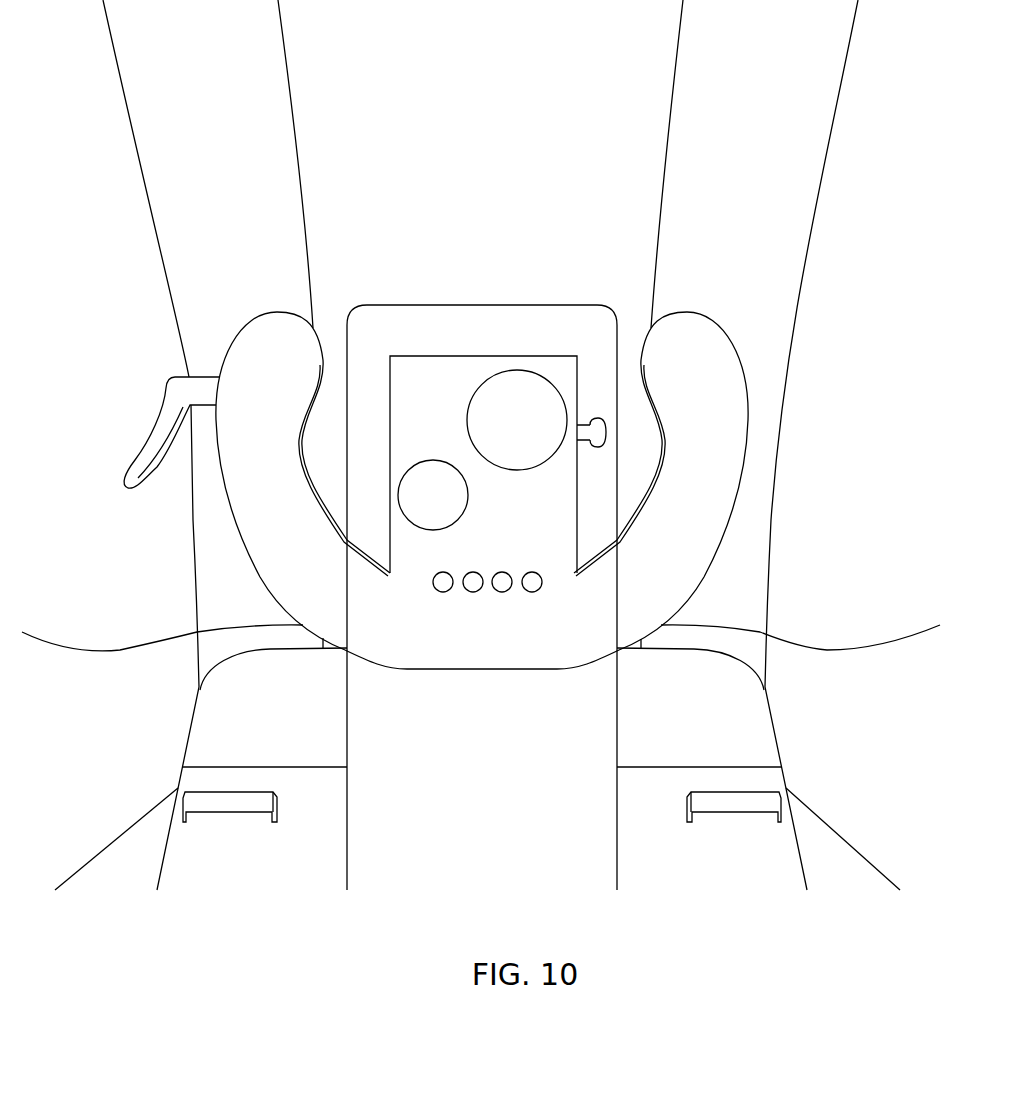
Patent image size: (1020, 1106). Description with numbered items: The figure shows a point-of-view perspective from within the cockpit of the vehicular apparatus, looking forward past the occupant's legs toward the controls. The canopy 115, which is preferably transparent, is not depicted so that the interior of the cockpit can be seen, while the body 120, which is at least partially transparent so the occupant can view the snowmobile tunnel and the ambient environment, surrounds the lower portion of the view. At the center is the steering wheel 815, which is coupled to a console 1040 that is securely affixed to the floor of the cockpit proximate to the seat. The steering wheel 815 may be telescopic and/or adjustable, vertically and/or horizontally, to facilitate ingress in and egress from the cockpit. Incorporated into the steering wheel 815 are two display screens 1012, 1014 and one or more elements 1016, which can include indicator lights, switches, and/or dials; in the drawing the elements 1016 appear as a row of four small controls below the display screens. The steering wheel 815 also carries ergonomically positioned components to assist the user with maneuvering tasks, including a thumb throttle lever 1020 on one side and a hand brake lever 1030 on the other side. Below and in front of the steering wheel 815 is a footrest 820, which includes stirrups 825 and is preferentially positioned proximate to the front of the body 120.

The canopy 115 is at (766, 159).
The body 120 is at (914, 761).
The steering wheel 815 is at (503, 647).
The footrest 820 is at (697, 730).
The stirrups 825 is at (253, 792).
The display screen 1012 is at (540, 428).
The display screen 1014 is at (457, 505).
The elements 1016 is at (545, 570).
The thumb throttle lever 1020 is at (600, 415).
The hand brake lever 1030 is at (208, 377).
The console 1040 is at (458, 331).